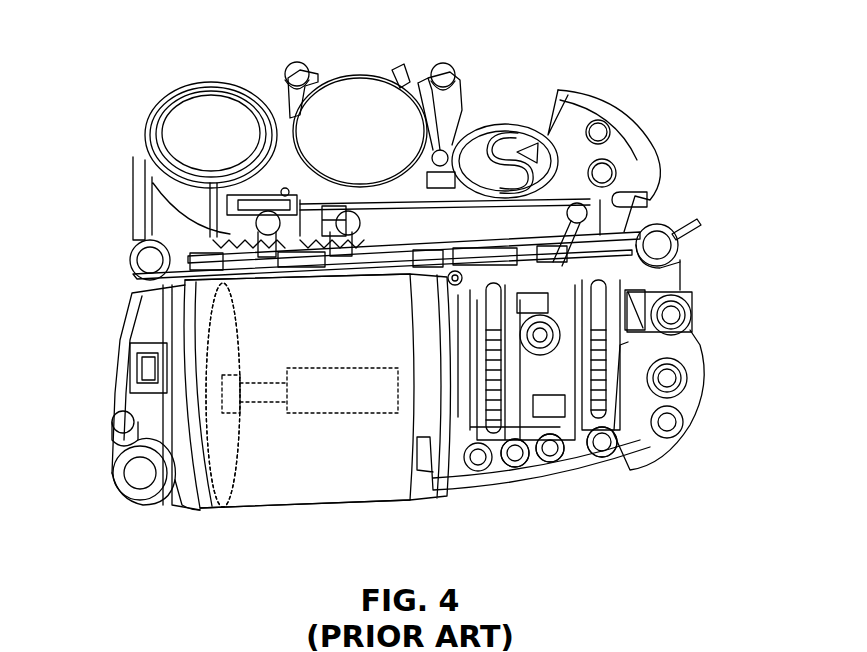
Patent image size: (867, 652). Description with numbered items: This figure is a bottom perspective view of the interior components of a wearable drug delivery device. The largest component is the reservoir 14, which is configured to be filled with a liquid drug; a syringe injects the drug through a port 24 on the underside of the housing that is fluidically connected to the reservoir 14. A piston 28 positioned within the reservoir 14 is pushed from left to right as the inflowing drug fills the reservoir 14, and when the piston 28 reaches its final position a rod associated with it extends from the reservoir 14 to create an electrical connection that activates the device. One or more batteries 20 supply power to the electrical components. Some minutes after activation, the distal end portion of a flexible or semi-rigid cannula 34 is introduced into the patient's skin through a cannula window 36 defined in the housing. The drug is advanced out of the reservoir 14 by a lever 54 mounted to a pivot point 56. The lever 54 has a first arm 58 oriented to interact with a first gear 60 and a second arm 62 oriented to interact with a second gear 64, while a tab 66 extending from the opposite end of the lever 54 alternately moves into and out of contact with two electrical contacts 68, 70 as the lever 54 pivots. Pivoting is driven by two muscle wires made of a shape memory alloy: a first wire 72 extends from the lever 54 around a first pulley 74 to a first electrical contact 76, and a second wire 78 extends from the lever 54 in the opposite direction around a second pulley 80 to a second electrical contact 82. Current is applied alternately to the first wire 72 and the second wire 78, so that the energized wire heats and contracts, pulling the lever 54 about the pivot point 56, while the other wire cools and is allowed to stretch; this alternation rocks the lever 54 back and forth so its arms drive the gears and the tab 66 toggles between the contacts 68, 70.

The reservoir 14 is at (345, 478).
The battery 20 is at (345, 98).
The port 24 is at (116, 480).
The piston 28 is at (225, 455).
The cannula 34 is at (698, 212).
The cannula window 36 is at (640, 194).
The lever 54 is at (548, 375).
The pivot point 56 is at (550, 337).
The first arm 58 is at (480, 282).
The first gear 60 is at (493, 382).
The second arm 62 is at (583, 303).
The second gear 64 is at (604, 394).
The tab 66 is at (573, 450).
The electrical contact 68 is at (610, 450).
The electrical contact 70 is at (538, 447).
The first wire 72 is at (186, 246).
The first pulley 74 is at (143, 260).
The first electrical contact 76 is at (268, 223).
The second wire 78 is at (600, 234).
The second pulley 80 is at (660, 246).
The second electrical contact 82 is at (350, 210).